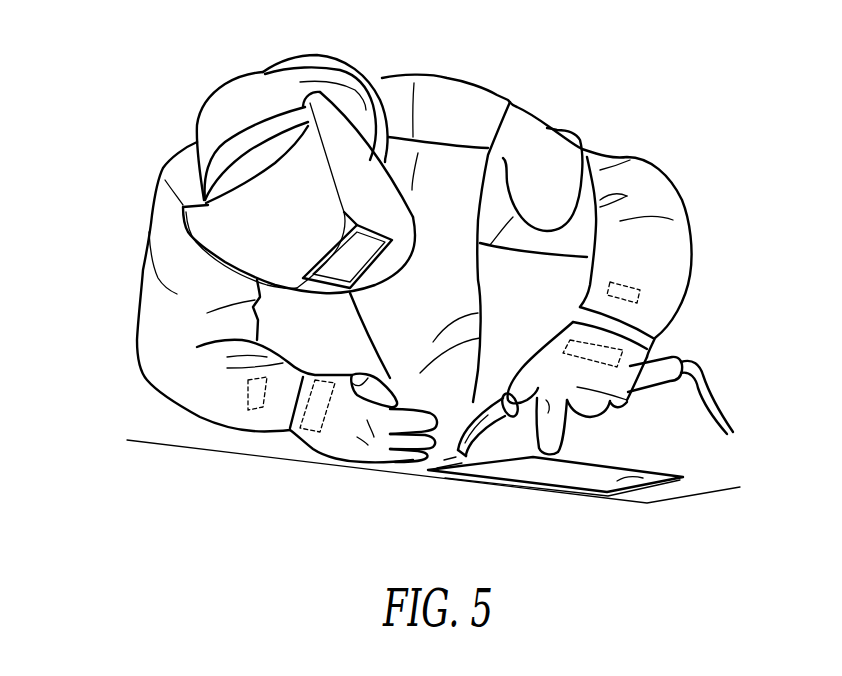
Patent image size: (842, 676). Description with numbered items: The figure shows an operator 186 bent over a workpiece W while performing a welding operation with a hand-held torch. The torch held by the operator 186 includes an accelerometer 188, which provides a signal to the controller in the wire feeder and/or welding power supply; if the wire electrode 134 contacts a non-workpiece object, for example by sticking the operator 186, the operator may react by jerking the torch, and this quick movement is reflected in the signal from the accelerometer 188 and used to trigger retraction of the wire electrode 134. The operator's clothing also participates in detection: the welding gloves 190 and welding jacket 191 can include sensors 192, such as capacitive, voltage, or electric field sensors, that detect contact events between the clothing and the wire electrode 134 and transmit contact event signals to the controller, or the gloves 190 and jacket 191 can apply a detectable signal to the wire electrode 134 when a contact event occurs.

The operator 186 is at (606, 97).
The welding jacket 191 is at (137, 337).
The sensors 192 is at (247, 407).
The welding gloves 190 is at (338, 427).
The accelerometer 188 is at (486, 412).
The wire electrode 134 is at (440, 457).
The workpiece W is at (657, 477).